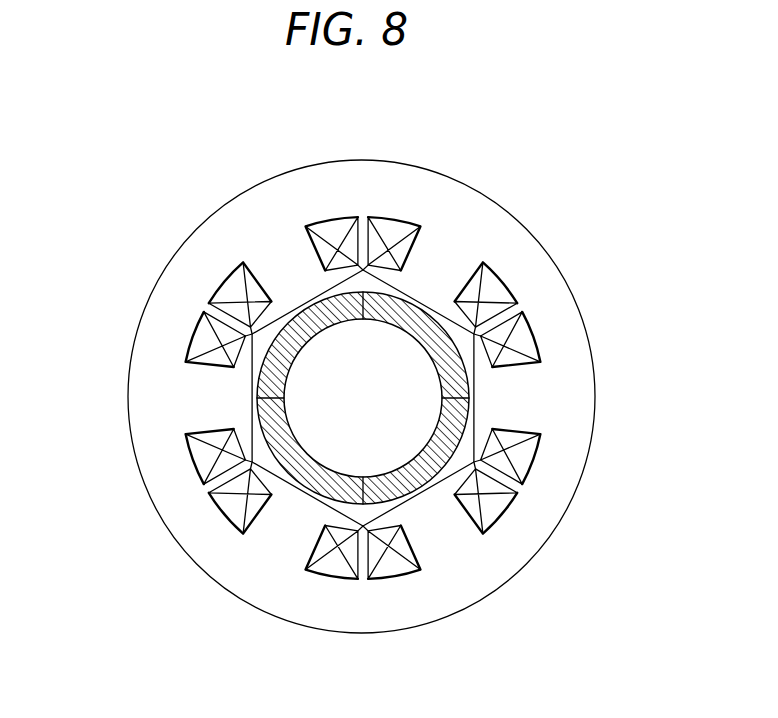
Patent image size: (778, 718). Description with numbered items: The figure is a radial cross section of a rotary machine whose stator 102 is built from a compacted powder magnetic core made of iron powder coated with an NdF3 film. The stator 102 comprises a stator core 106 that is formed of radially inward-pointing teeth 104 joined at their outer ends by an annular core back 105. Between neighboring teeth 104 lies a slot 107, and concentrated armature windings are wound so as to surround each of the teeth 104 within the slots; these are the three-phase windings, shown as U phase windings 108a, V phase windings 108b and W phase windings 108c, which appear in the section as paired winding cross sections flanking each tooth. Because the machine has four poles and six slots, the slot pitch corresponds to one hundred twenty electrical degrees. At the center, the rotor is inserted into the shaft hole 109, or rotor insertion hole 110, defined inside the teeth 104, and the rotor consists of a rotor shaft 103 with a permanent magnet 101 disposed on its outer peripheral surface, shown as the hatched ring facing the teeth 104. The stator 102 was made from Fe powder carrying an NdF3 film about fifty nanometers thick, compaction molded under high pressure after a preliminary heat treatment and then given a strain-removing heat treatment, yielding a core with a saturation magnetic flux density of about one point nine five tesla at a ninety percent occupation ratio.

The permanent magnet 101 is at (422, 317).
The stator 102 is at (592, 330).
The rotor shaft 103 is at (310, 423).
The teeth 104 is at (432, 257).
The core back 105 is at (527, 535).
The stator core 106 is at (260, 613).
The slot 107 is at (212, 482).
The U phase windings 108a is at (200, 333).
The V phase windings 108b is at (492, 283).
The W phase windings 108c is at (333, 230).
The shaft hole 109 is at (308, 297).
The rotor insertion hole 110 is at (252, 297).